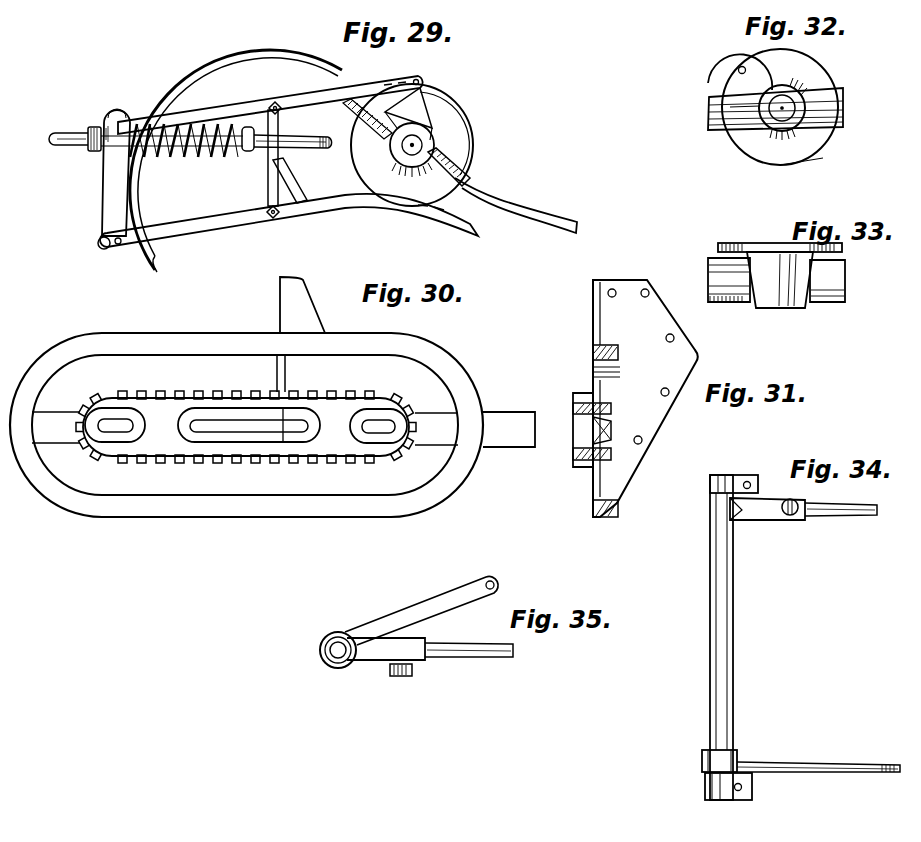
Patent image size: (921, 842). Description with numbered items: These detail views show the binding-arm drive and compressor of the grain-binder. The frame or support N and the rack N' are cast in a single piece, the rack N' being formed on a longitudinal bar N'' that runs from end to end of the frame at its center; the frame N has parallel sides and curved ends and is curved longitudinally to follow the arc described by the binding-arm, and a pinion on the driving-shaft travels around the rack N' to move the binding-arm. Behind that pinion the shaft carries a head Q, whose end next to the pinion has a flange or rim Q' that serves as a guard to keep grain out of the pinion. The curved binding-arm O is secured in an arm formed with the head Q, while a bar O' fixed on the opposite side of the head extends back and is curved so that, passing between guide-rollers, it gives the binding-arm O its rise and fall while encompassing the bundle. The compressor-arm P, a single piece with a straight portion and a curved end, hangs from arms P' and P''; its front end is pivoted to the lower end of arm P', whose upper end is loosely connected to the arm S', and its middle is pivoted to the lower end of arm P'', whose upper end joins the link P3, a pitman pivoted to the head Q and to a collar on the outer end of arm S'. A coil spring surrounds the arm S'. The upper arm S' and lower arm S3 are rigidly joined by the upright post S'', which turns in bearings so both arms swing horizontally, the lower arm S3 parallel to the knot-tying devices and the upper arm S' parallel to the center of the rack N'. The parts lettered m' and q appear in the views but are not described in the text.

In FIG. 29, the binding-arm O is at (236, 156).
In FIG. 29, the bar O' is at (516, 205).
In FIG. 29, the compressor-arm P is at (288, 221).
In FIG. 29, the arm P' is at (116, 172).
In FIG. 29, the arm P'' is at (255, 158).
In FIG. 29, the link or bar (pitman) P3 is at (270, 105).
In FIG. 29, the arm S' is at (190, 144).
In FIG. 34, the arm S' is at (803, 520).
In FIG. 35, the arm S' is at (430, 661).
In FIG. 34, the upright post S'' is at (730, 637).
In FIG. 35, the upright post S'' is at (325, 650).
In FIG. 34, the lower arm S3 is at (818, 757).
In FIG. 35, the lower arm S3 is at (421, 610).
In FIG. 29, the brace m' is at (294, 180).
In FIG. 29, the head Q is at (419, 145).
In FIG. 32, the head Q is at (782, 107).
In FIG. 33, the head Q is at (789, 279).
In FIG. 32, the flange or rim Q' is at (814, 155).
In FIG. 33, the flange or rim Q' is at (780, 228).
In FIG. 29, the pulley hub q is at (449, 156).
In FIG. 32, the pulley hub q is at (783, 99).
In FIG. 33, the pulley hub q is at (760, 243).
In FIG. 30, the frame or support N is at (272, 397).
In FIG. 31, the frame or support N is at (627, 402).
In FIG. 30, the rack N' is at (246, 415).
In FIG. 31, the rack N' is at (589, 431).
In FIG. 30, the longitudinal bar N'' is at (267, 425).
In FIG. 31, the longitudinal bar N'' is at (610, 430).